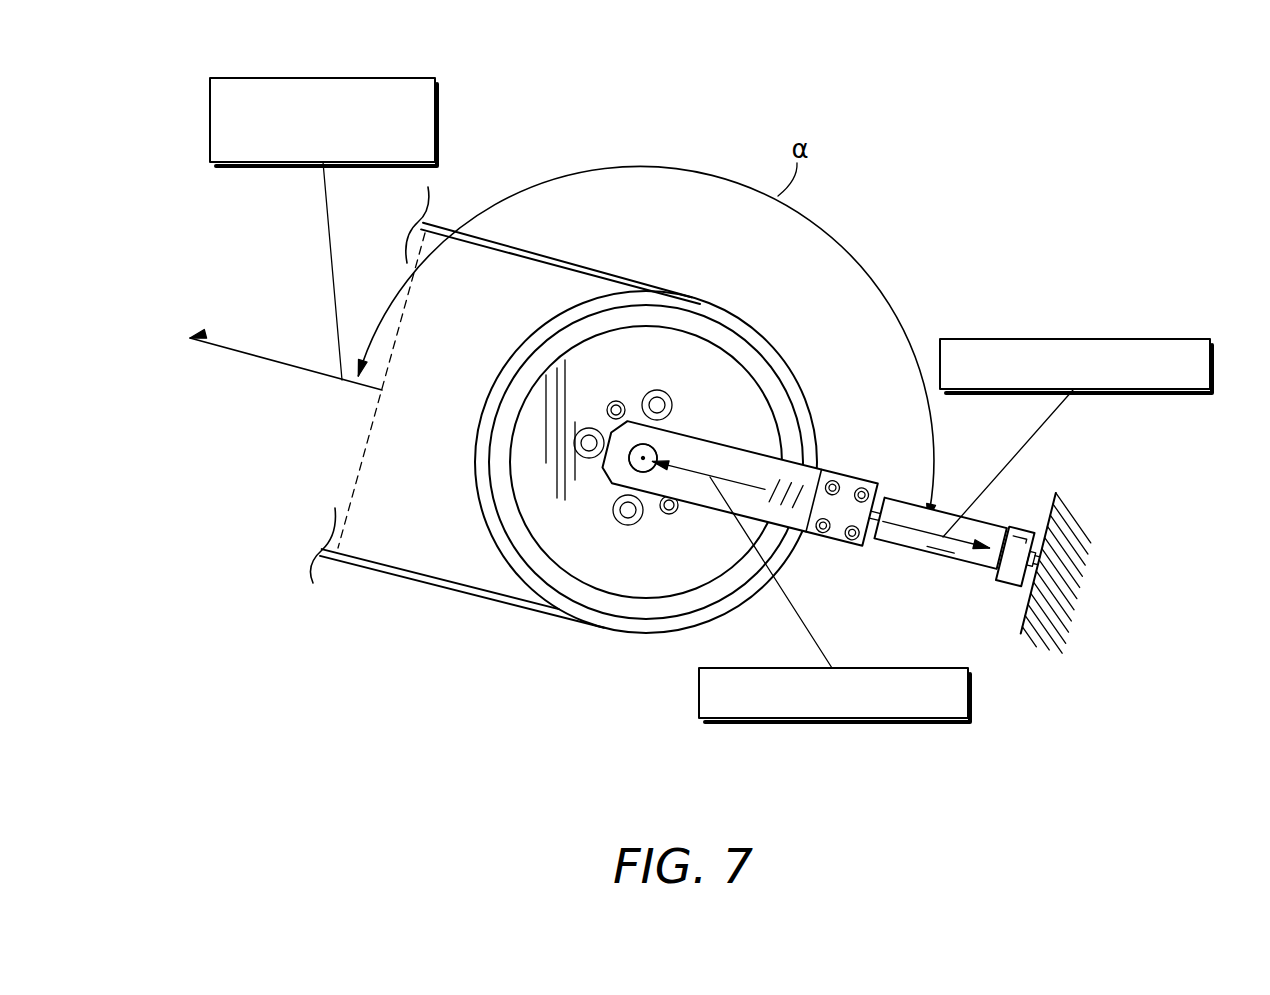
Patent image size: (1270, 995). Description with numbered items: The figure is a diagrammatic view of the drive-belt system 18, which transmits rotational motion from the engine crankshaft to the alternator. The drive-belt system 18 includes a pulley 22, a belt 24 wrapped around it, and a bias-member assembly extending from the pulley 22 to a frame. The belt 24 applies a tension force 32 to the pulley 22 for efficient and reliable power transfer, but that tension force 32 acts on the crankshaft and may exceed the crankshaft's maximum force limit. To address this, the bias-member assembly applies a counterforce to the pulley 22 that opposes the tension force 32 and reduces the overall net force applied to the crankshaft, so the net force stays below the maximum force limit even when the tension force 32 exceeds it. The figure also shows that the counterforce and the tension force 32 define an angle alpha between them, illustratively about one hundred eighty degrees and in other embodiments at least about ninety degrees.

The drive-belt system 18 is at (738, 112).
The pulley 22 is at (745, 366).
The belt 24 is at (418, 578).
The tension force 32 is at (322, 78).